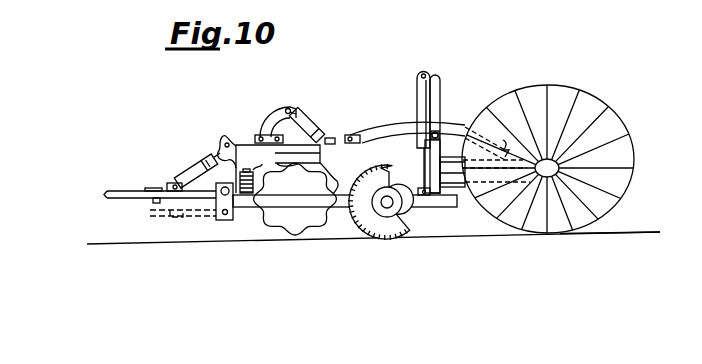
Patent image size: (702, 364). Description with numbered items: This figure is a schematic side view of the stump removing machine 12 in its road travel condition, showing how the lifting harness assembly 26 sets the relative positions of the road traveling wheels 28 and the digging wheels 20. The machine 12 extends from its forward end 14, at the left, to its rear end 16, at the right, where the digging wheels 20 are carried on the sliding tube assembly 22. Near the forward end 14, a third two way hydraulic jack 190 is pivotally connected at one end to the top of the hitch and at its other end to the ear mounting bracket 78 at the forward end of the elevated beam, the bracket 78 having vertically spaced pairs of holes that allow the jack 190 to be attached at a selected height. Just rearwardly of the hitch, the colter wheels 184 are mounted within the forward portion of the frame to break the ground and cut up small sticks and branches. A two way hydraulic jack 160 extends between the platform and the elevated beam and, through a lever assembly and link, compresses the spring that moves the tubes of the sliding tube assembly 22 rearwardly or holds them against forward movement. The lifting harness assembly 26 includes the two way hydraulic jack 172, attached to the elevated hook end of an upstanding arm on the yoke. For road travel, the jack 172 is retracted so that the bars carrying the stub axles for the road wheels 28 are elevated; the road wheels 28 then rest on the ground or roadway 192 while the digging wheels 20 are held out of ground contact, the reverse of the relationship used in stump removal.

The forward end 14 is at (158, 161).
The third two way hydraulic jack 190 is at (199, 157).
The ear mounting bracket 78 is at (231, 130).
The machine 12 is at (338, 102).
The two way hydraulic jack 160 is at (304, 114).
The colter wheels 184 is at (300, 228).
The road traveling wheels 28 is at (408, 233).
The two way hydraulic jack 172 is at (416, 82).
The sliding tube assembly 22 is at (450, 146).
The lifting harness assembly 26 is at (446, 89).
The rear end 16 is at (571, 135).
The digging wheels 20 is at (626, 109).
The ground or roadway 192 is at (645, 233).